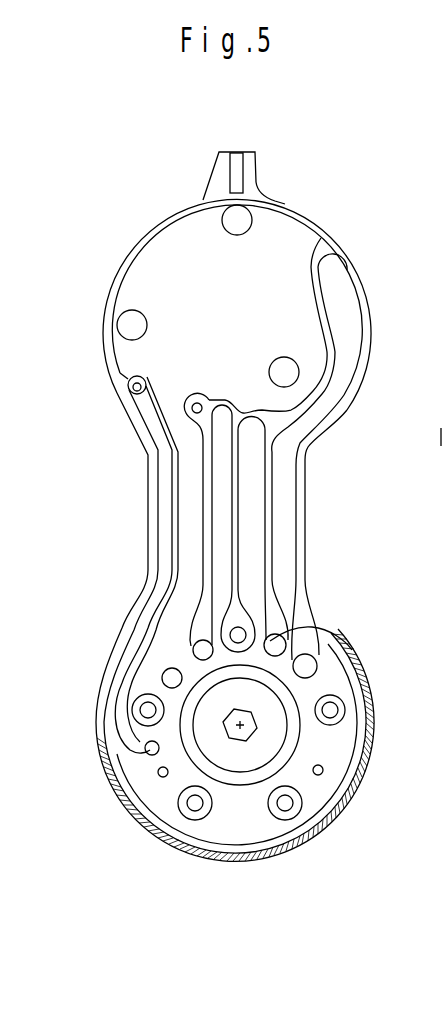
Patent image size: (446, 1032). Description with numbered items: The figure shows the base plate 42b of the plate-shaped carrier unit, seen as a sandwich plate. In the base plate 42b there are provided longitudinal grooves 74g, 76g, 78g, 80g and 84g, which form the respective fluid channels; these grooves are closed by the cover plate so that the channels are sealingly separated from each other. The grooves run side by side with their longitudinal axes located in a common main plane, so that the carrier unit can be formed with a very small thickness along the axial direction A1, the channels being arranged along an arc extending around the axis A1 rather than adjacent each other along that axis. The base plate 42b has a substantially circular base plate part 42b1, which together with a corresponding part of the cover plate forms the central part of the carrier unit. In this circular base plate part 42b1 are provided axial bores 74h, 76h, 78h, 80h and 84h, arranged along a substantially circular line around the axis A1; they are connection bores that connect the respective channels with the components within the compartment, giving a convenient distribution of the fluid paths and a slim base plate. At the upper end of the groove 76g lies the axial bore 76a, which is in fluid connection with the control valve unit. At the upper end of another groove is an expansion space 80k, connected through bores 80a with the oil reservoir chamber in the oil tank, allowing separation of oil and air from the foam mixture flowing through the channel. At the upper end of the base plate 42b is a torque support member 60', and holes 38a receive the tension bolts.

The base plate 42b is at (303, 468).
The torque support member 60' is at (219, 169).
The bores 80a is at (237, 221).
The expansion space 80k is at (295, 251).
The axial bore 76a is at (221, 418).
The longitudinal groove 80g is at (190, 468).
The longitudinal groove 84g is at (141, 641).
The longitudinal groove 76g is at (225, 498).
The longitudinal groove 78g is at (250, 523).
The longitudinal groove 74g is at (281, 566).
The axial bore 76h is at (200, 651).
The axial bore 78h is at (270, 642).
The axial bore 74h is at (306, 668).
The axial bore 80h is at (172, 681).
The axial bore 84h is at (155, 749).
The axis A1 is at (244, 732).
The holes 38a is at (191, 806).
The circular base plate part 42b1 is at (220, 828).